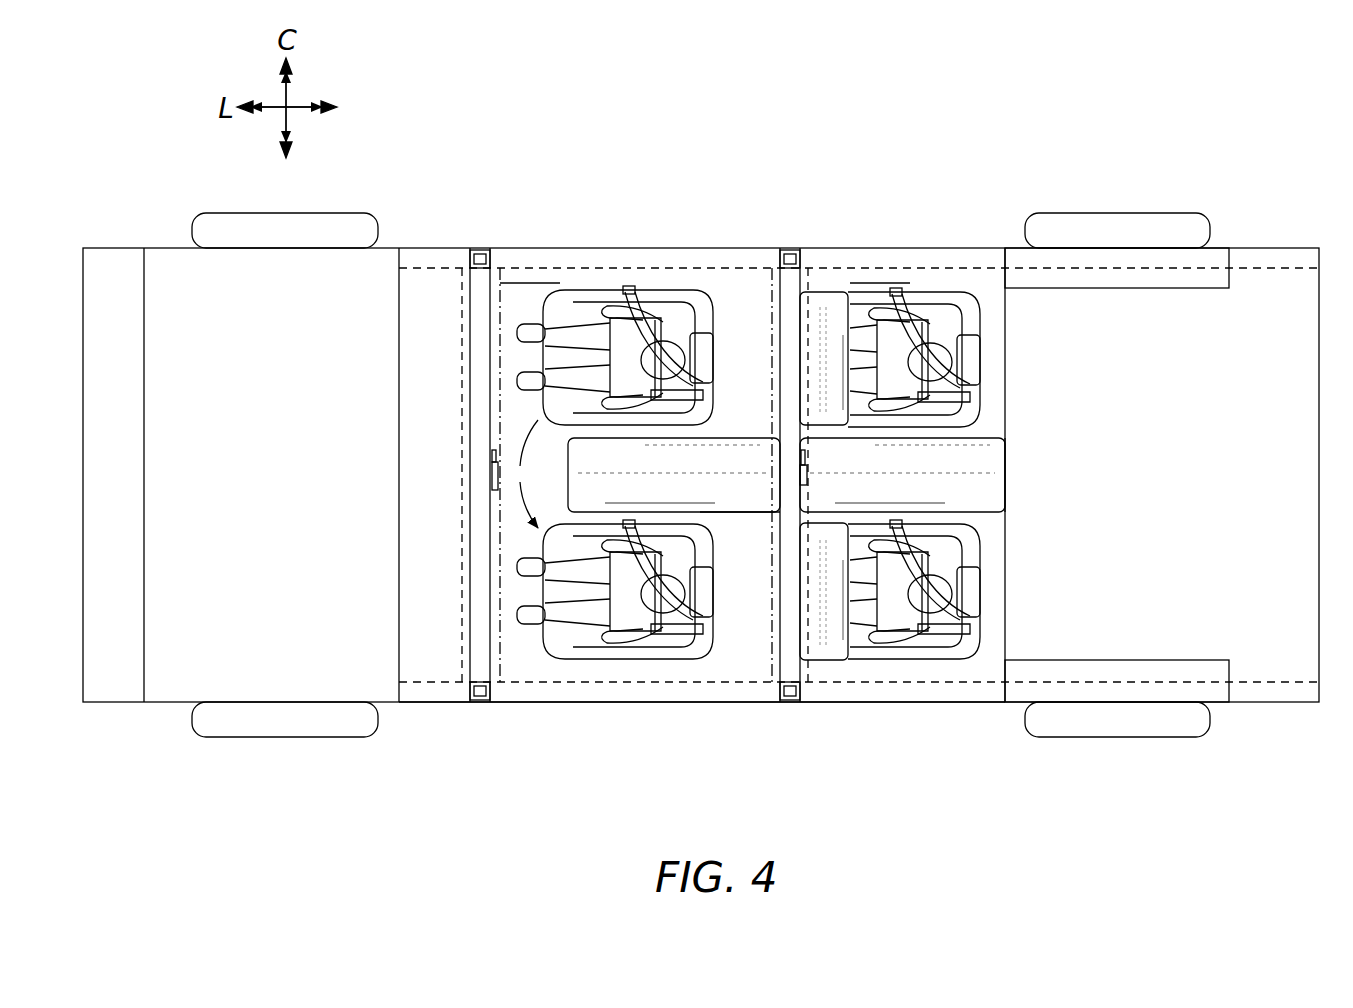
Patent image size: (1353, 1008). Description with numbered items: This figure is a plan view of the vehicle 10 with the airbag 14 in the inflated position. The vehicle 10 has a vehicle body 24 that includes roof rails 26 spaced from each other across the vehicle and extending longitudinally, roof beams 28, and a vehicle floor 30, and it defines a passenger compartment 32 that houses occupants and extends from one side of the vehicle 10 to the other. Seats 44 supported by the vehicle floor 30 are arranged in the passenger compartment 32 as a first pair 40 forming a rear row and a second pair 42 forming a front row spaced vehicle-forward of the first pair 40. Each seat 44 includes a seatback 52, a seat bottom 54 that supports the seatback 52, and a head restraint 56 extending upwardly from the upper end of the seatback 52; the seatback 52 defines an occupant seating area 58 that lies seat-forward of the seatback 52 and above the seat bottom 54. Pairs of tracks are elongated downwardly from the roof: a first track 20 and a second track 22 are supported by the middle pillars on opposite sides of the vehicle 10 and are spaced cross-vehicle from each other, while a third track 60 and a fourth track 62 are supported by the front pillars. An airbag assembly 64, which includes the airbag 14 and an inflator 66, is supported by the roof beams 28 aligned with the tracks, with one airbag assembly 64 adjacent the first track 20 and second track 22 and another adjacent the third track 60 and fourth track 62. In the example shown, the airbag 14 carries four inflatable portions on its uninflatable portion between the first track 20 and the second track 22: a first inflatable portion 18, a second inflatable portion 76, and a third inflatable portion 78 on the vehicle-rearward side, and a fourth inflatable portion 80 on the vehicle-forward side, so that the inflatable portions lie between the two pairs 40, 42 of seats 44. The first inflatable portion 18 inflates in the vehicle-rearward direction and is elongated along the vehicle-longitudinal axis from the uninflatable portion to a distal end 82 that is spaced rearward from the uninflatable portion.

The vehicle 10 is at (1118, 128).
The airbag 14 is at (747, 517).
The first inflatable portion 18 is at (1005, 428).
The first track 20 is at (790, 704).
The second track 22 is at (778, 473).
The vehicle body 24 is at (985, 246).
The roof rail 26 is at (1278, 258).
The roof beam 28 is at (462, 290).
The vehicle floor 30 is at (525, 660).
The passenger compartment 32 is at (716, 283).
The first pair of seats 40 is at (923, 285).
The second pair of seats 42 is at (615, 283).
The seat 44 is at (792, 490).
The seatback 52 is at (690, 300).
The seat bottom 54 is at (565, 298).
The head restraint 56 is at (712, 350).
The occupant seating area 58 is at (863, 526).
The third track 60 is at (475, 703).
The fourth track 62 is at (467, 475).
The airbag assembly 64 is at (500, 283).
The inflator 66 is at (491, 470).
The second inflatable portion 76 is at (832, 650).
The third inflatable portion 78 is at (840, 295).
The fourth inflatable portion 80 is at (796, 487).
The distal end 82 is at (570, 452).